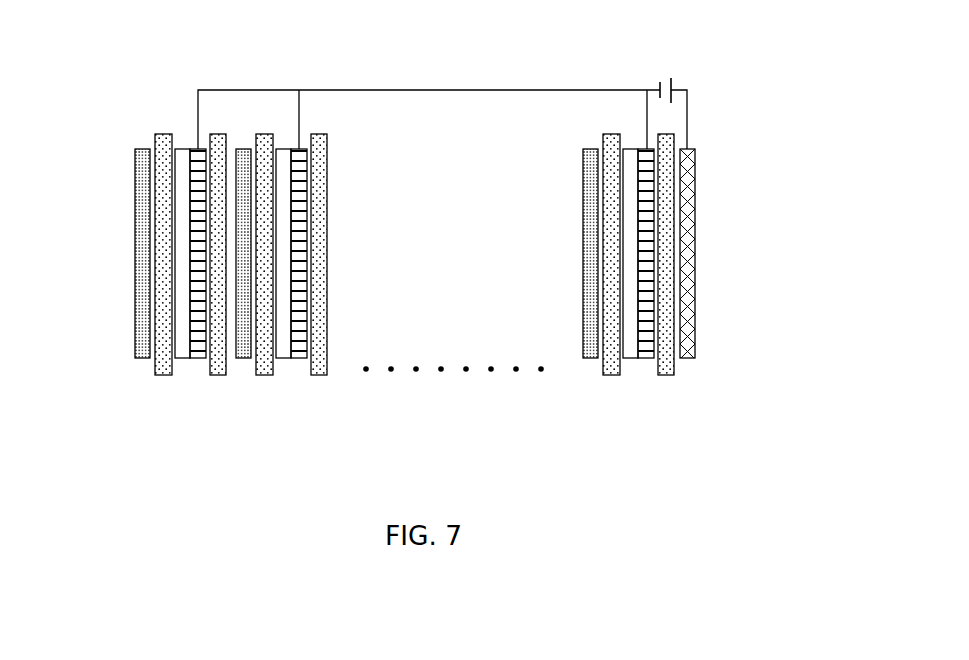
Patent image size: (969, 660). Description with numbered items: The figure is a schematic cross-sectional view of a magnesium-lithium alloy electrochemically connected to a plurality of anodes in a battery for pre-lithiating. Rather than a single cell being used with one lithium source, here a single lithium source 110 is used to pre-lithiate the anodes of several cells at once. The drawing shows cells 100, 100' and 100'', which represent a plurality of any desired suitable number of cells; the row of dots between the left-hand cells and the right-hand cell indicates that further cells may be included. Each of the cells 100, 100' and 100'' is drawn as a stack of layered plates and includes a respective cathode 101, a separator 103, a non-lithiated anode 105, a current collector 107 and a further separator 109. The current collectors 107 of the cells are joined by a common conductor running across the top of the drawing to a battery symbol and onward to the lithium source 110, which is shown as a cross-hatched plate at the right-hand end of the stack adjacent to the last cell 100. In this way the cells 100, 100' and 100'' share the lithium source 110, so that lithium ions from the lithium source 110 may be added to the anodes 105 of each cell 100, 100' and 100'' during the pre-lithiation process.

The lithium ion battery cell 100 is at (639, 194).
The cell 100' is at (173, 51).
The cell 100'' is at (293, 203).
The cathode 101 is at (143, 358).
The separator 103 is at (162, 375).
The non-lithiated anode 105 is at (183, 358).
The current collector 107 is at (198, 358).
The separator 109 is at (219, 375).
The lithium source 110 is at (687, 358).